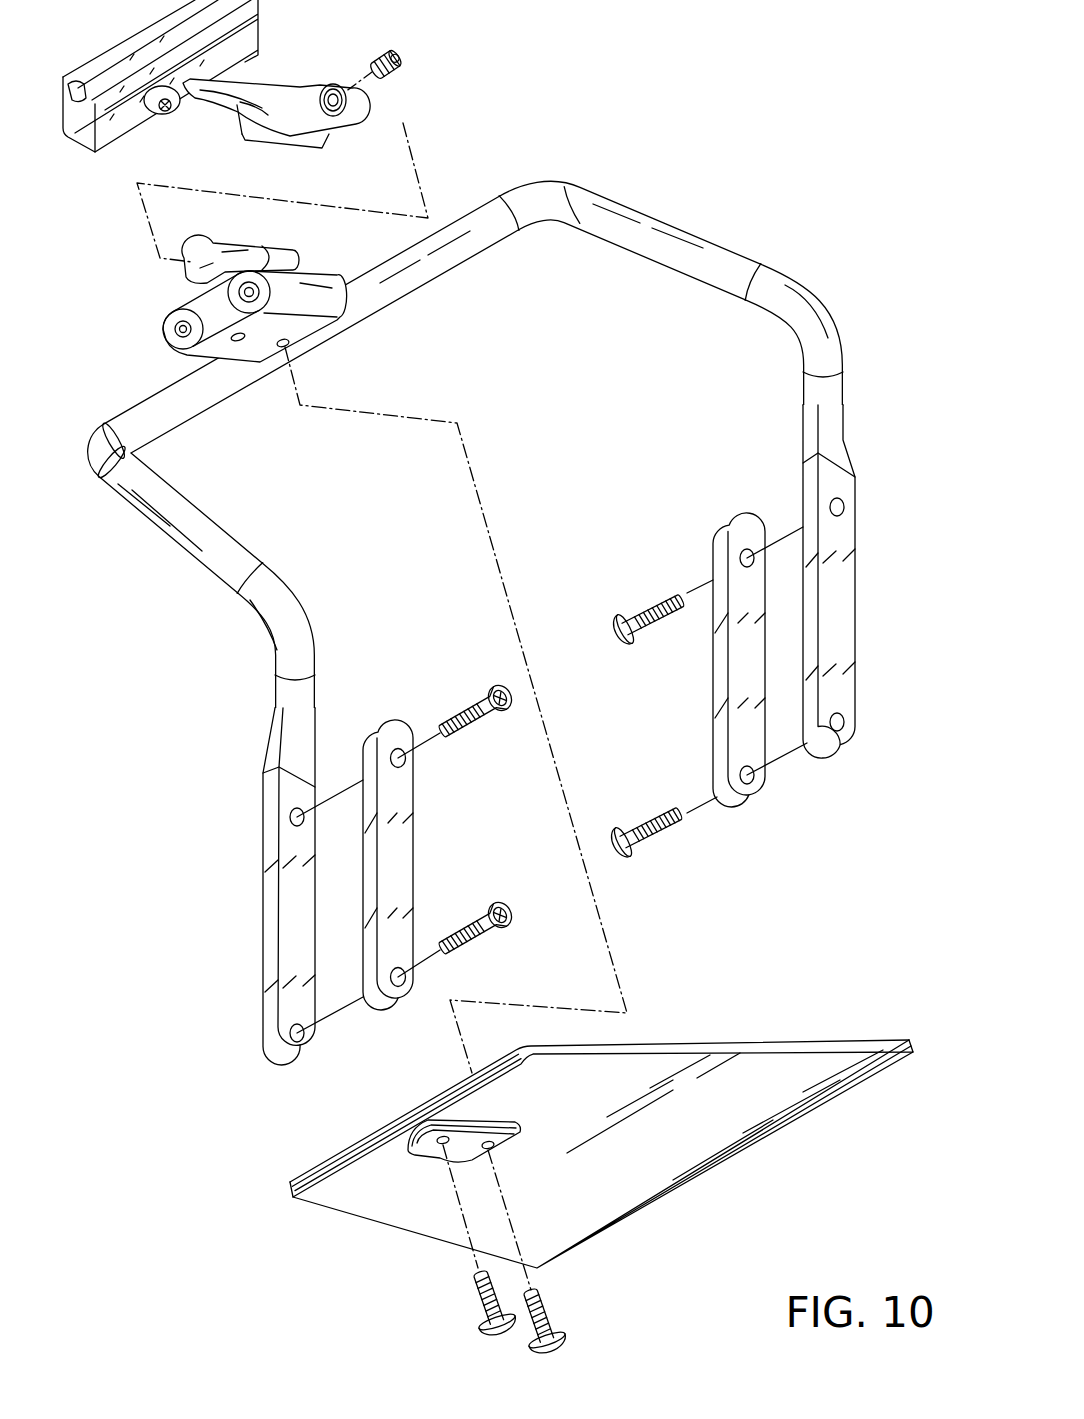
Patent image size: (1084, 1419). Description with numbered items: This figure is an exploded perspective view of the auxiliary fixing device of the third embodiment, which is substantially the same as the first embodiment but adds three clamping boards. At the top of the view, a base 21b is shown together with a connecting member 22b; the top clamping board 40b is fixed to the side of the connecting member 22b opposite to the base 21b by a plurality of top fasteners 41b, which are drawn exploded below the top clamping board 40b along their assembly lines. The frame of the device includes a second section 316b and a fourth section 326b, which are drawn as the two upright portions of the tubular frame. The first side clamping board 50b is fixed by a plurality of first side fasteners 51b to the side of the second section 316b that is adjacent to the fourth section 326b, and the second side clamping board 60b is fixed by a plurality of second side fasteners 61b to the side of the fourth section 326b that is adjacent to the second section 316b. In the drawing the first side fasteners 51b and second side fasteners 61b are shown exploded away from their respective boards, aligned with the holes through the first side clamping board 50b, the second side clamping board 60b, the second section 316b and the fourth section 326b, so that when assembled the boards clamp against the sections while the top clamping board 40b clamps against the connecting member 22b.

The base 21b is at (288, 100).
The connecting member 22b is at (320, 297).
The second section 316b is at (840, 597).
The fourth section 326b is at (293, 910).
The first side clamping board 50b is at (743, 669).
The first side fasteners 51b is at (625, 615).
The second side clamping board 60b is at (400, 853).
The second side fasteners 61b is at (497, 688).
The top clamping board 40b is at (792, 1075).
The top fasteners 41b is at (477, 1286).